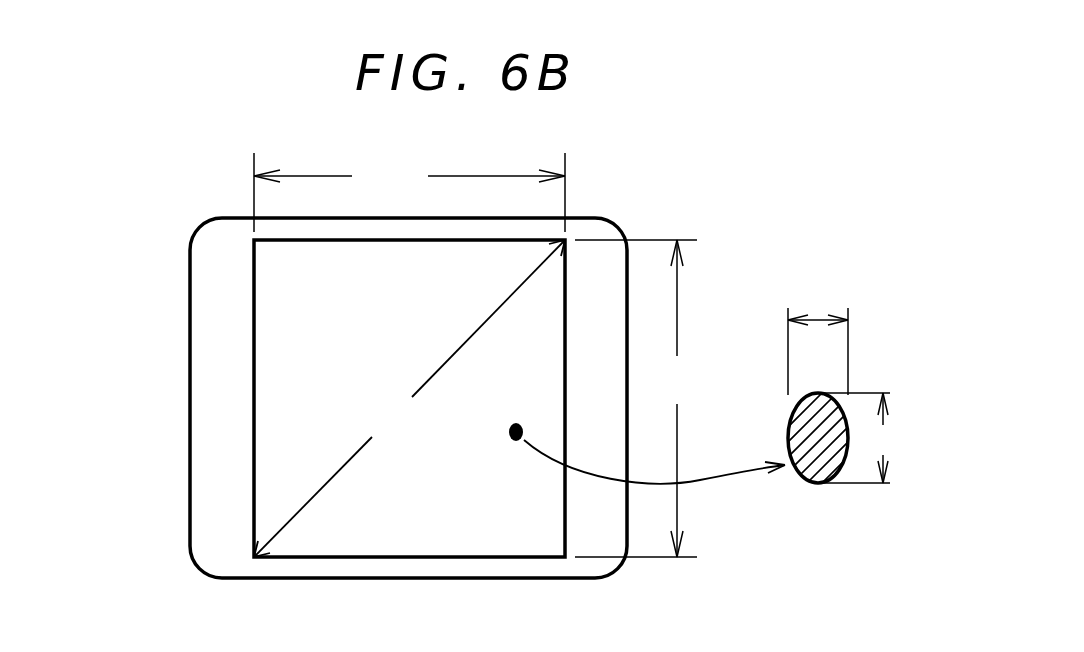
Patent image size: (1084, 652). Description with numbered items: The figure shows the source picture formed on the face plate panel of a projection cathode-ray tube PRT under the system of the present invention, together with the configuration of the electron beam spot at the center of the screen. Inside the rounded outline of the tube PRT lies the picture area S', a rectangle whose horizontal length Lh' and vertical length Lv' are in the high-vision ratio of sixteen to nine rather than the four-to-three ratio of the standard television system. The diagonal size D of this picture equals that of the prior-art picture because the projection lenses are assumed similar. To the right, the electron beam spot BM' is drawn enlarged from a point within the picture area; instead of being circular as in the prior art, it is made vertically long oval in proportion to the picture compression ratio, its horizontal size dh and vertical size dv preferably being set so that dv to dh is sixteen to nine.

The projection cathode-ray tube PRT is at (620, 228).
The screen display area S' is at (334, 398).
The diagonal size of picture D is at (409, 398).
The horizontal length of picture Lh' is at (409, 192).
The vertical length of picture Lv' is at (636, 398).
The shape of electron beam spot on face plate panel BM' is at (694, 466).
The horizontal size of electron beam dh is at (818, 312).
The vertical size of electron beam dv is at (857, 438).